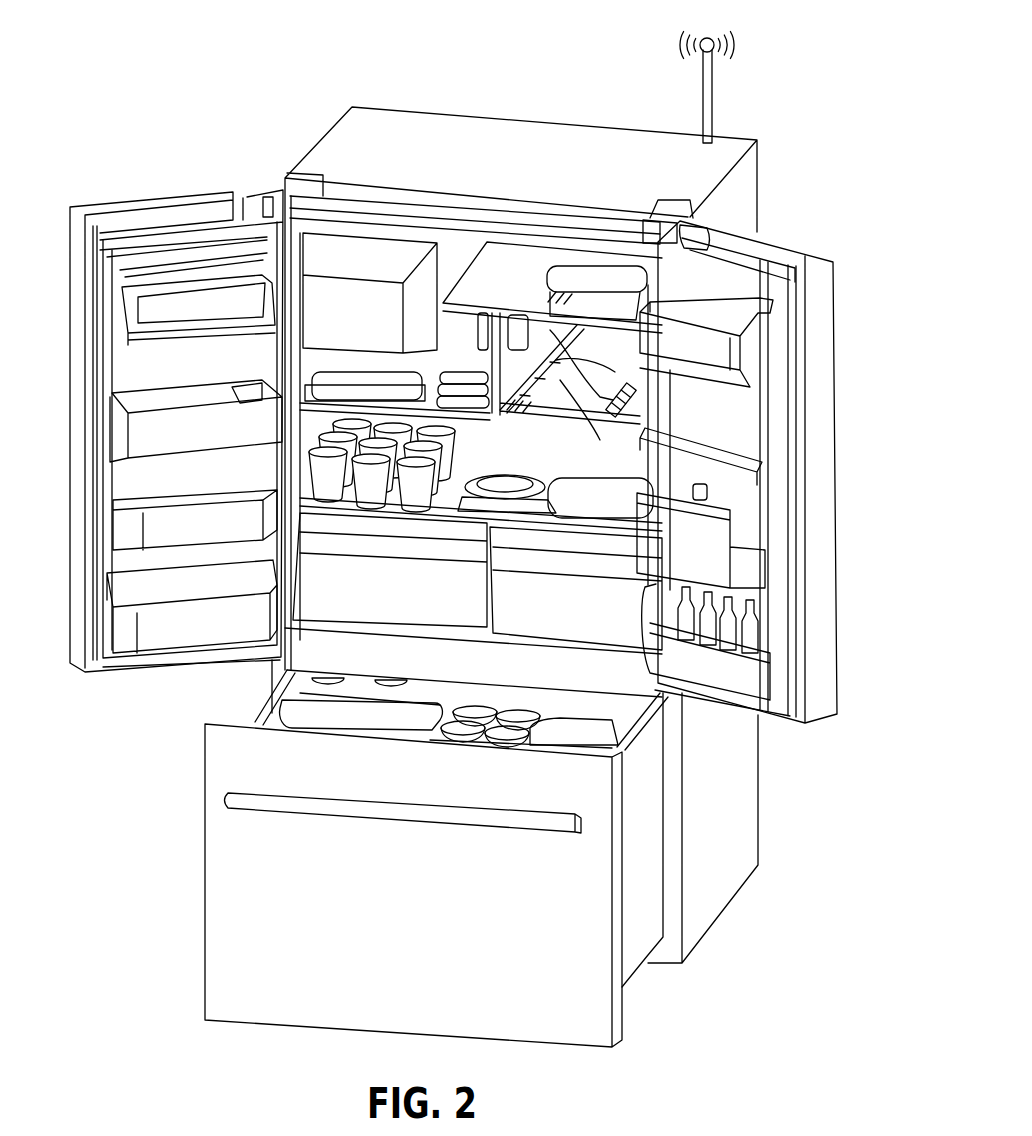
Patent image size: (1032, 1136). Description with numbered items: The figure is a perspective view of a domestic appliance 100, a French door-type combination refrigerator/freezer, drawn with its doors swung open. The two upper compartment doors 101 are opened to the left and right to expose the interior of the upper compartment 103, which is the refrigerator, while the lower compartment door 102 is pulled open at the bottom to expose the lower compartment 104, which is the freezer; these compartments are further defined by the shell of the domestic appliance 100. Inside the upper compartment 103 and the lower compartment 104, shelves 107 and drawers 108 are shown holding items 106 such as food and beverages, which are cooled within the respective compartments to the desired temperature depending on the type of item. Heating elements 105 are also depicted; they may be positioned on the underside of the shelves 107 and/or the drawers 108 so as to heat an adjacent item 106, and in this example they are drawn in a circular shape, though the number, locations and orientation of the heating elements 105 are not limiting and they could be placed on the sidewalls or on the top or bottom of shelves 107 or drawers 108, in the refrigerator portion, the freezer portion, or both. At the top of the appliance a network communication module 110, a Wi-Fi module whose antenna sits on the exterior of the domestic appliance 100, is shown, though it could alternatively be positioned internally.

The domestic appliance 100 is at (792, 227).
The upper compartment doors 101 is at (148, 200).
The lower compartment door 102 is at (618, 1020).
The upper compartment 103 is at (498, 252).
The lower compartment 104 is at (262, 716).
The heating elements 105 is at (570, 390).
The items 106 is at (606, 285).
The shelves 107 is at (551, 527).
The drawers 108 is at (586, 620).
The network communication module 110 is at (714, 90).